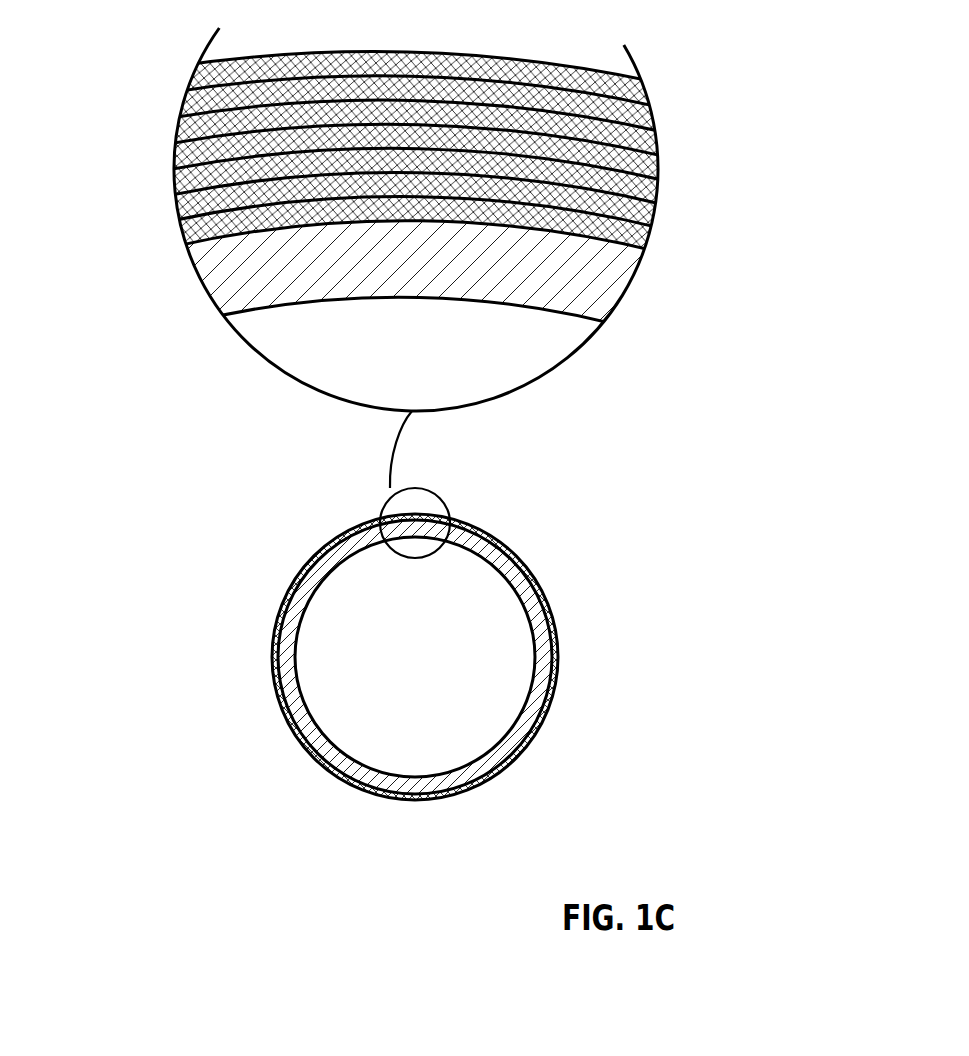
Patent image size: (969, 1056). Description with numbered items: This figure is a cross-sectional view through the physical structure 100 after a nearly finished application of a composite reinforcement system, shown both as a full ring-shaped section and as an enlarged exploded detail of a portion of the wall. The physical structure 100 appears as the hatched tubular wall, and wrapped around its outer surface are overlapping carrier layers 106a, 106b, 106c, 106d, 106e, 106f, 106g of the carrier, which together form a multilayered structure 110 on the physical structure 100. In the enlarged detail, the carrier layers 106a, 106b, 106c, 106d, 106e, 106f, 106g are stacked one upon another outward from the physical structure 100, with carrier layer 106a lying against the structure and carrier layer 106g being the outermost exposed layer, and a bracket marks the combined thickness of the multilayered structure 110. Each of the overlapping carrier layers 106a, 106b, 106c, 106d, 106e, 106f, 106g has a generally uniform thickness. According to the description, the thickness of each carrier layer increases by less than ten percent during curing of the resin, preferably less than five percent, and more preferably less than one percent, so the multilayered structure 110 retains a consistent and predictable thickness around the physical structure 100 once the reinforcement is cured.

The physical structure 100 is at (213, 288).
The carrier layer 106a is at (187, 228).
The carrier layer 106b is at (190, 205).
The carrier layer 106c is at (182, 180).
The carrier layer 106d is at (187, 163).
The carrier layer 106e is at (183, 136).
The carrier layer 106f is at (193, 110).
The carrier layer 106g is at (200, 75).
The multilayered structure 110 is at (645, 80).